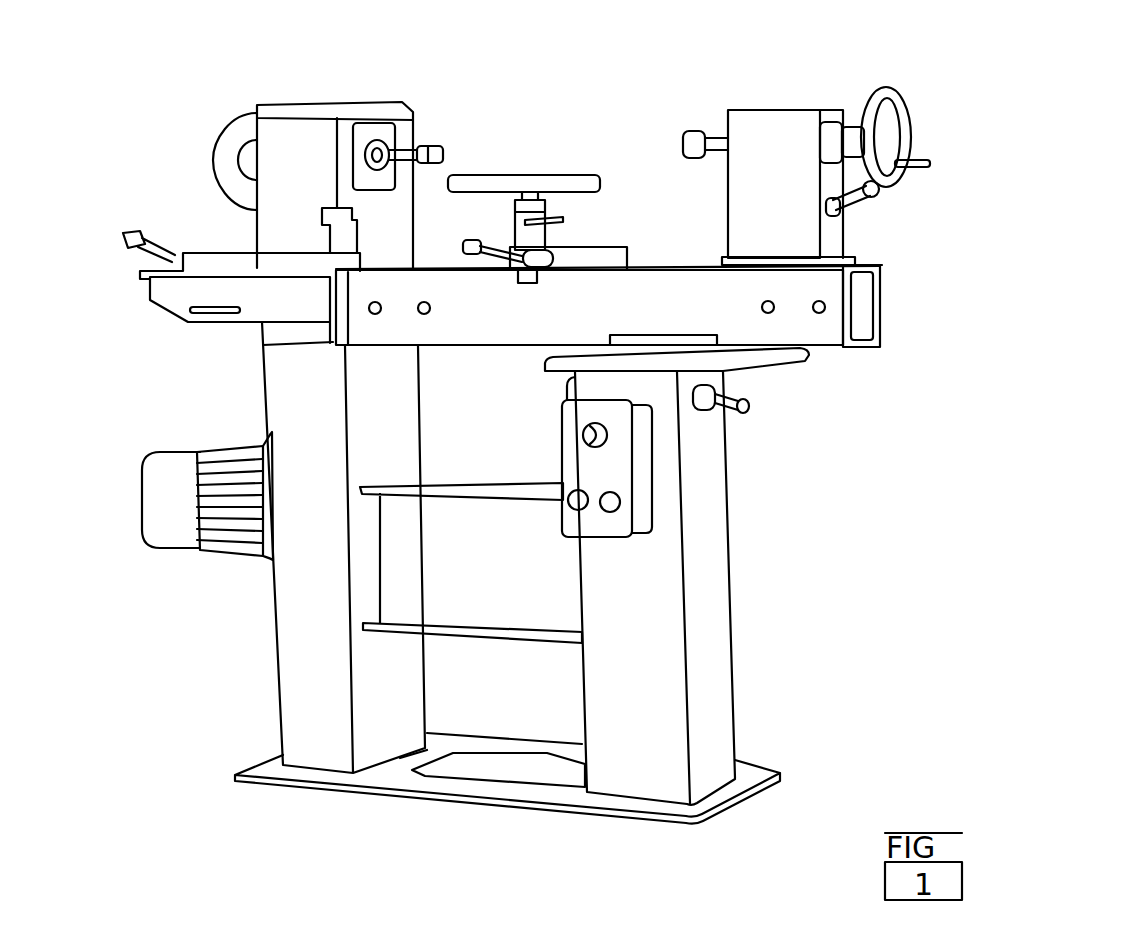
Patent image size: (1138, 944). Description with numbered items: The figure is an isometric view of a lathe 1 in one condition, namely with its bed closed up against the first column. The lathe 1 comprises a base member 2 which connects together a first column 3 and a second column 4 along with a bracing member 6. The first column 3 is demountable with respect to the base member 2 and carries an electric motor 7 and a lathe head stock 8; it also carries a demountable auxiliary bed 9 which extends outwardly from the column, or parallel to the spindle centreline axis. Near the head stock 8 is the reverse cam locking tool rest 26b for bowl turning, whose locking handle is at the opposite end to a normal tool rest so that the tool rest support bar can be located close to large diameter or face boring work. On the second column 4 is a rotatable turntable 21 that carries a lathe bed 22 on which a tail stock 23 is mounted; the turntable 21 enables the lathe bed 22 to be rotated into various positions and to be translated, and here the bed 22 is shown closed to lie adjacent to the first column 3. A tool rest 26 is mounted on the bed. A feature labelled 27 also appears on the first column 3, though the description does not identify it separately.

The lathe 1 is at (1047, 105).
The base member 2 is at (535, 793).
The first column 3 is at (302, 697).
The second column 4 is at (718, 627).
The bracing member 6 is at (484, 571).
The electric motor 7 is at (222, 553).
The lathe head stock 8 is at (410, 137).
The demountable auxiliary bed 9 is at (245, 290).
The rotatable turntable 21 is at (748, 360).
The lathe bed 22 is at (657, 262).
The tail stock 23 is at (760, 148).
The tool rest 26 is at (503, 178).
The reverse cam locking tool rest 26b is at (248, 262).
The clamp screw hole 27 is at (370, 312).